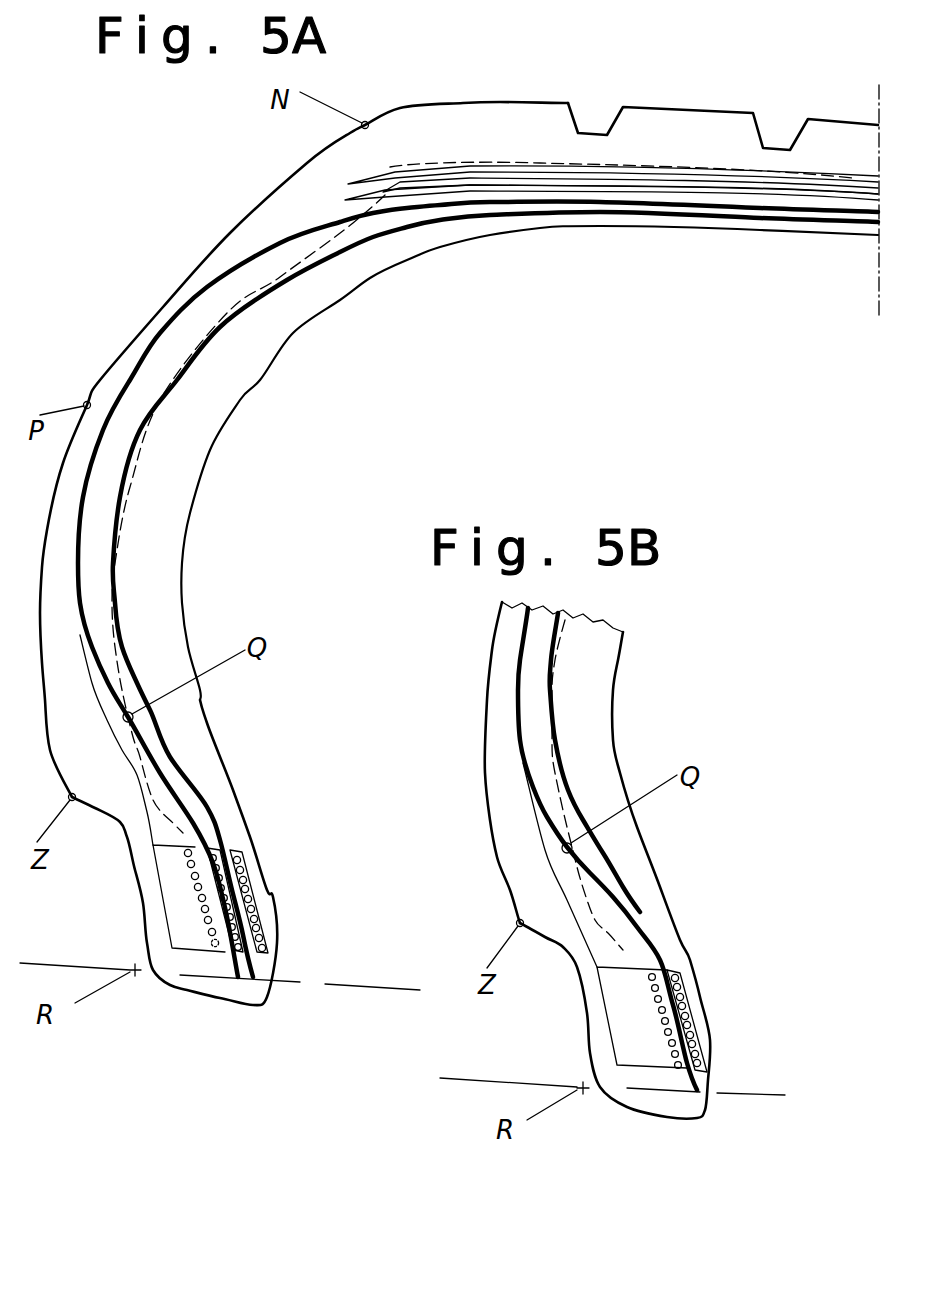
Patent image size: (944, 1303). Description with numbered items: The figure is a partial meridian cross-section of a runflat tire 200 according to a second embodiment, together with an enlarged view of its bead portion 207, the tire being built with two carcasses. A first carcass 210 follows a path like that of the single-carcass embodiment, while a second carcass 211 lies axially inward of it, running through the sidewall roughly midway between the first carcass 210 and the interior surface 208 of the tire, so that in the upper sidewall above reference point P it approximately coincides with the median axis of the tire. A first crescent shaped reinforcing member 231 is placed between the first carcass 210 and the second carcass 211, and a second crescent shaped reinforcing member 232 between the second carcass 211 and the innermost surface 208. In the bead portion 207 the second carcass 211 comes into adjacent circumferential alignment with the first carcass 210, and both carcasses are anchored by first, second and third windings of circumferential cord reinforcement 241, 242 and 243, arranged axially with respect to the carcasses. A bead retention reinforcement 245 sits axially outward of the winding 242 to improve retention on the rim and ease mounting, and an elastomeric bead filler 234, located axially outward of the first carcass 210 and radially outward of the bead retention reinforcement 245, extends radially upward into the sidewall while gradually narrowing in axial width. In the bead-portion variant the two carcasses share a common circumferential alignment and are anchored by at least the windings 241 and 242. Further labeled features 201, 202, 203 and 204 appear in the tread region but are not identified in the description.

In FIG. 5A, the tire 200 is at (536, 389).
In FIG. 5A, the tread portion 201 is at (751, 155).
In FIG. 5A, the first belt layer 202 is at (473, 166).
In FIG. 5A, the second belt layer 203 is at (533, 180).
In FIG. 5A, the third belt layer 204 is at (633, 186).
In FIG. 5A, the bead portion 207 is at (108, 813).
In FIG. 5B, the bead portion 207 is at (550, 940).
In FIG. 5A, the interior surface 208 is at (215, 447).
In FIG. 5A, the first carcass 210 is at (160, 333).
In FIG. 5B, the first carcass 210 is at (517, 687).
In FIG. 5A, the second carcass 211 is at (117, 567).
In FIG. 5B, the second carcass 211 is at (557, 705).
In FIG. 5A, the first crescent shaped reinforcing member 231 is at (205, 318).
In FIG. 5A, the second crescent shaped reinforcing member 232 is at (242, 358).
In FIG. 5A, the elastomeric bead filler 234 is at (160, 791).
In FIG. 5B, the elastomeric bead filler 234 is at (605, 916).
In FIG. 5A, the first winding of circumferential cord reinforcement 241 is at (247, 873).
In FIG. 5B, the first winding of circumferential cord reinforcement 241 is at (683, 993).
In FIG. 5A, the second winding of circumferential cord reinforcement 242 is at (220, 940).
In FIG. 5B, the second winding of circumferential cord reinforcement 242 is at (667, 1037).
In FIG. 5A, the third winding of circumferential cord reinforcement 243 is at (202, 912).
In FIG. 5A, the bead retention reinforcement 245 is at (187, 952).
In FIG. 5B, the bead retention reinforcement 245 is at (630, 1067).